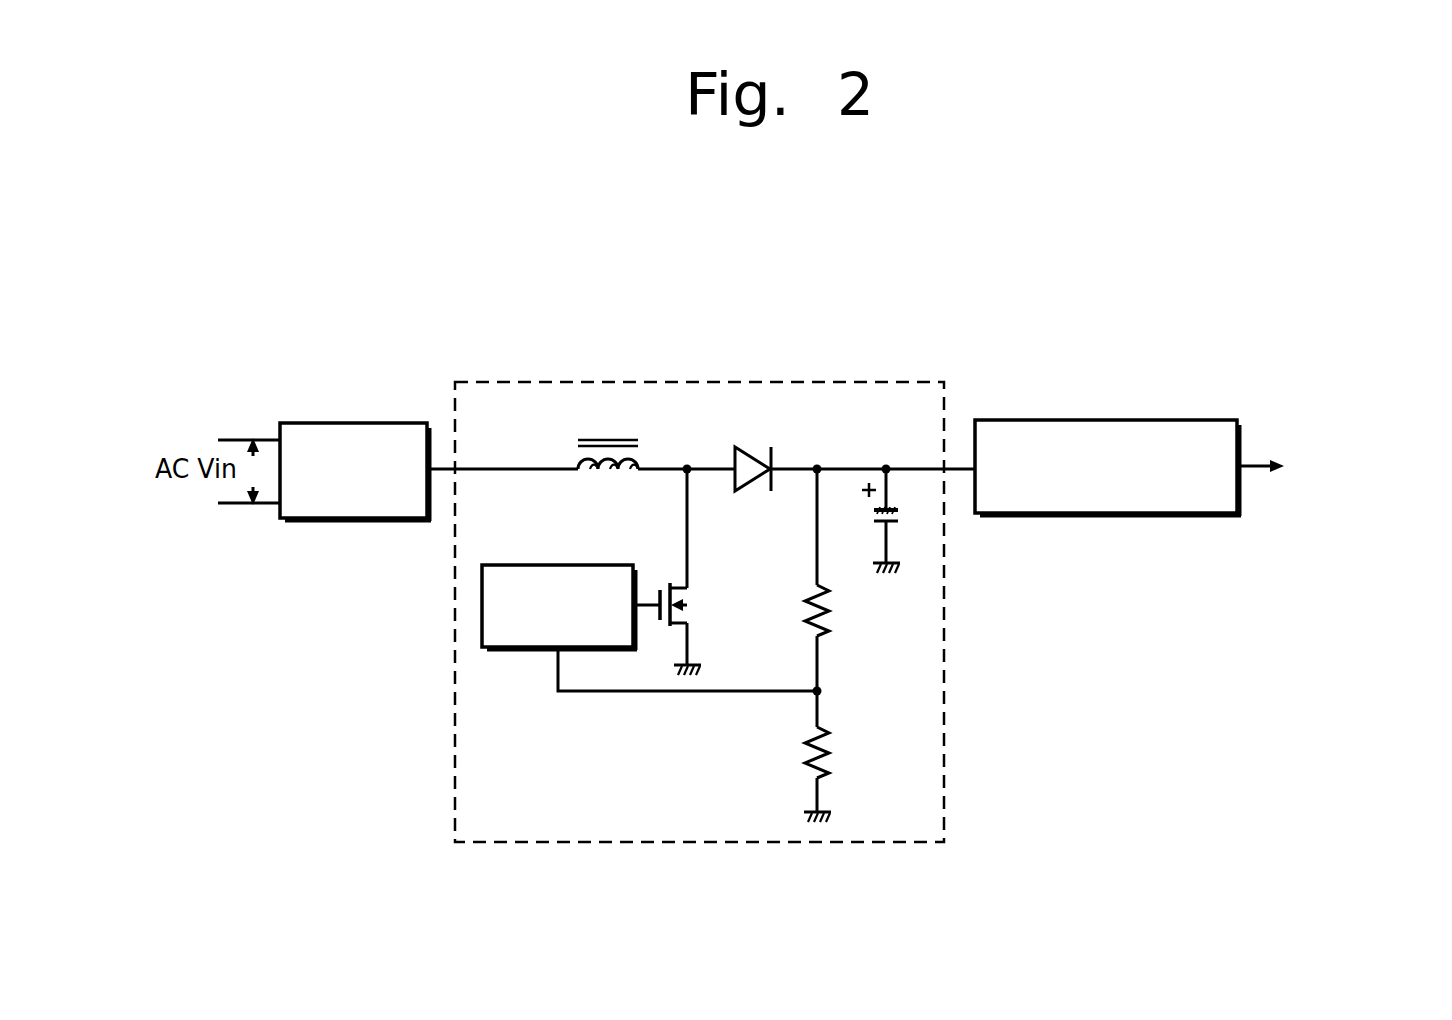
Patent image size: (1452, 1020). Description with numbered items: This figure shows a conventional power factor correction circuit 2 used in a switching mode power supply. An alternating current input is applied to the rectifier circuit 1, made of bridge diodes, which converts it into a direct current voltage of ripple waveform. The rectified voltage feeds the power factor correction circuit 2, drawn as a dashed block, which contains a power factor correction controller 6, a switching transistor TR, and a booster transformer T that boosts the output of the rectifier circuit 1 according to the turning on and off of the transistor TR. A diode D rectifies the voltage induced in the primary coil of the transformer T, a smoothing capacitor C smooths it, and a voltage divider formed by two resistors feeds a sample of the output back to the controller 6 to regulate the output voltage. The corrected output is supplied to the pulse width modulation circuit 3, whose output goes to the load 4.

The rectifier circuit 1 is at (397, 422).
The power factor correction circuit 2 is at (902, 380).
The pulse width modulation circuit 3 is at (1203, 419).
The load 4 is at (1328, 466).
The power factor correction controller 6 is at (598, 563).